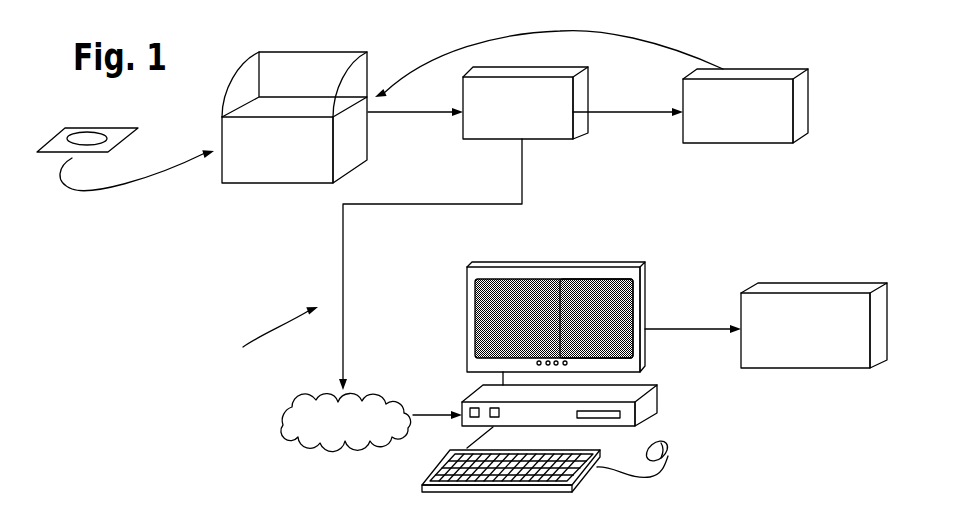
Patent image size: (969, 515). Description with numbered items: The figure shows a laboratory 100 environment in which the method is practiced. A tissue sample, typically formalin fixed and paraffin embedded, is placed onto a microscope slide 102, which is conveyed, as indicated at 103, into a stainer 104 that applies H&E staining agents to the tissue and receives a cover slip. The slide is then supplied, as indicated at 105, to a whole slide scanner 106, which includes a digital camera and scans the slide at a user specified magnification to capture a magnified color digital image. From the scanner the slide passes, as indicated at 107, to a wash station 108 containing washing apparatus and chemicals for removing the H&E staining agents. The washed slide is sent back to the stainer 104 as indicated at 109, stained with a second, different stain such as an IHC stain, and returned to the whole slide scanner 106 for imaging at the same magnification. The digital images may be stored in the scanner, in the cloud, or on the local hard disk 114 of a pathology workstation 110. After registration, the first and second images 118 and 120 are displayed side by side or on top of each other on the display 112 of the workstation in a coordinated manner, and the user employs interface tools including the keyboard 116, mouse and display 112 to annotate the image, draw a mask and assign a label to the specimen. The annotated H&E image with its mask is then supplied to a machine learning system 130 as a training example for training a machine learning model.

The laboratory environment 100 is at (266, 340).
The microscope slide 102 is at (117, 127).
The slide transfer to stainer 103 is at (110, 192).
The stainer 104 is at (268, 183).
The supply of slide to whole slide scanner 105 is at (422, 113).
The whole slide scanner 106 is at (547, 139).
The transfer from scanner to wash station 107 is at (640, 113).
The wash station 108 is at (767, 143).
The return of slide to stainer 109 is at (668, 44).
The pathology workstation 110 is at (597, 413).
The display 112 is at (604, 301).
The local hard disk 114 is at (628, 413).
The keyboard 116 is at (447, 458).
The first image 118 is at (515, 292).
The second image 120 is at (594, 296).
The machine learning system 130 is at (832, 283).